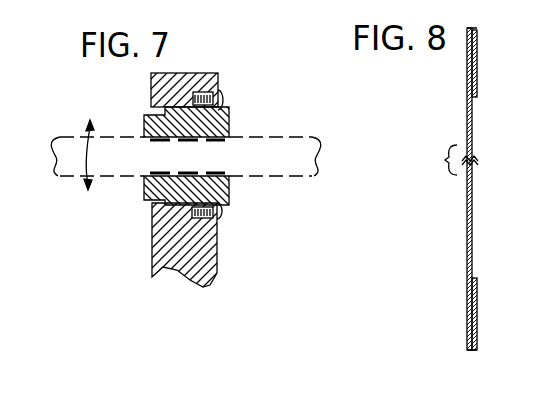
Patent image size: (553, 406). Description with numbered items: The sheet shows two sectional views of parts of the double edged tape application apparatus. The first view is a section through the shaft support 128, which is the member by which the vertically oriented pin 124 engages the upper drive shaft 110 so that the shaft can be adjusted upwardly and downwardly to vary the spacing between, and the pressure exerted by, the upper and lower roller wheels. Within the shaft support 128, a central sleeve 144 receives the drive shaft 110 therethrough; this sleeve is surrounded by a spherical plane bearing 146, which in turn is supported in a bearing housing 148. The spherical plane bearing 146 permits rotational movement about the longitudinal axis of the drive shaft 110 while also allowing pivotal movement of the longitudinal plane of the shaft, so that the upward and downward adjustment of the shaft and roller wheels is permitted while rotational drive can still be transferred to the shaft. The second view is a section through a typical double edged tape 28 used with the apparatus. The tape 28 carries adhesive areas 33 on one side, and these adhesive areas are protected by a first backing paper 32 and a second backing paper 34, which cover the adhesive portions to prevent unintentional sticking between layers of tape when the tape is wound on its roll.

In FIG. 7, the upper drive shaft 110 is at (298, 134).
In FIG. 7, the vertically oriented pin 124 is at (85, 140).
In FIG. 7, the central sleeve 144 is at (229, 125).
In FIG. 7, the spherical plane bearing 146 is at (226, 208).
In FIG. 7, the shaft support 128 is at (297, 266).
In FIG. 7, the bearing housing 148 is at (152, 212).
In FIG. 8, the tape 28 is at (466, 137).
In FIG. 8, the first backing paper 32 is at (478, 55).
In FIG. 8, the adhesive areas 33 is at (470, 30).
In FIG. 8, the second backing paper 34 is at (478, 308).